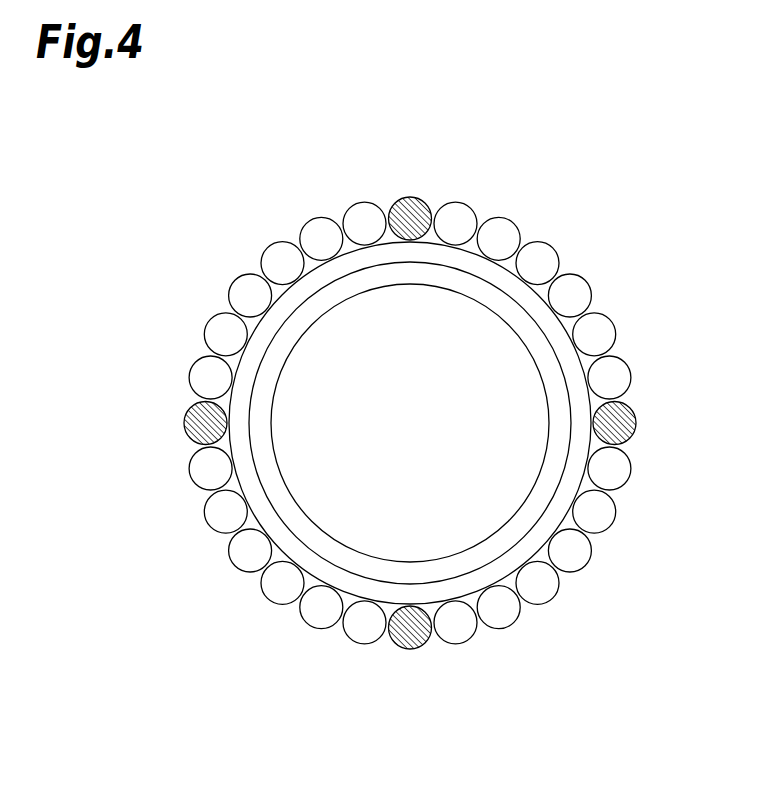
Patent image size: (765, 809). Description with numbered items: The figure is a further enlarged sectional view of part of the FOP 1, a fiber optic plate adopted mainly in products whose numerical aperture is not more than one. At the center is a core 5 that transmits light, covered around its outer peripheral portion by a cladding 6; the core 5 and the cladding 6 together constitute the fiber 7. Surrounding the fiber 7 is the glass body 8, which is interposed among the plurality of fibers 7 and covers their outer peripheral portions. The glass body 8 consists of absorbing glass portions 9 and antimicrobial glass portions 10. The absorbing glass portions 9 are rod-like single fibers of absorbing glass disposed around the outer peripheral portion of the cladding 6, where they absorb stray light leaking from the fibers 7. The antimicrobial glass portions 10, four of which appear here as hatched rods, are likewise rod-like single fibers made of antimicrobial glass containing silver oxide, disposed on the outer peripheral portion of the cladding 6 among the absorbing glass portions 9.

The FOP 1 is at (585, 110).
The core 5 is at (478, 330).
The cladding 6 is at (558, 340).
The fiber 7 is at (683, 248).
The glass body 8 is at (537, 136).
The absorbing glass portion 9 is at (505, 232).
The antimicrobial glass portion 10 is at (413, 205).